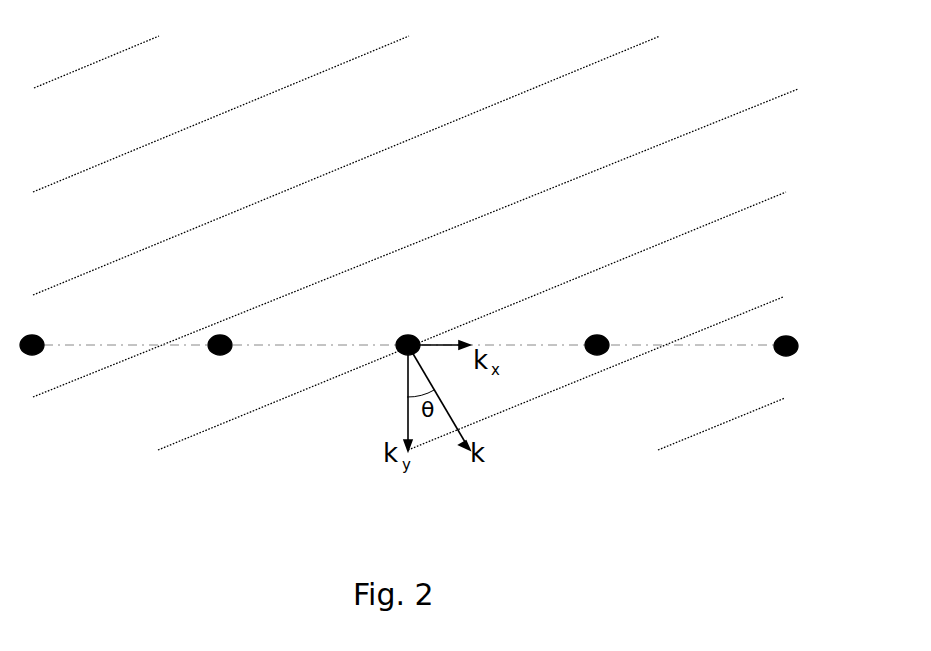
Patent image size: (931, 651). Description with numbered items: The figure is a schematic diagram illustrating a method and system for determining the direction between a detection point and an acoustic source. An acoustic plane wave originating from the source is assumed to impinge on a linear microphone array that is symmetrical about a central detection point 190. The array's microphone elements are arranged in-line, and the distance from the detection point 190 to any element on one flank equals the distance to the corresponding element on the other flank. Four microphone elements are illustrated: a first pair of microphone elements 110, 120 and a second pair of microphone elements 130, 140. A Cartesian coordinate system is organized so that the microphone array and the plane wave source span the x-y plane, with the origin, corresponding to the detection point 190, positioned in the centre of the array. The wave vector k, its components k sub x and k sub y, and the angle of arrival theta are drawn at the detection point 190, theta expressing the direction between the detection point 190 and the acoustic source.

The microphone element 110 is at (219, 336).
The microphone element 120 is at (598, 336).
The microphone element 130 is at (38, 336).
The microphone element 140 is at (784, 337).
The central detection point 190 is at (409, 336).